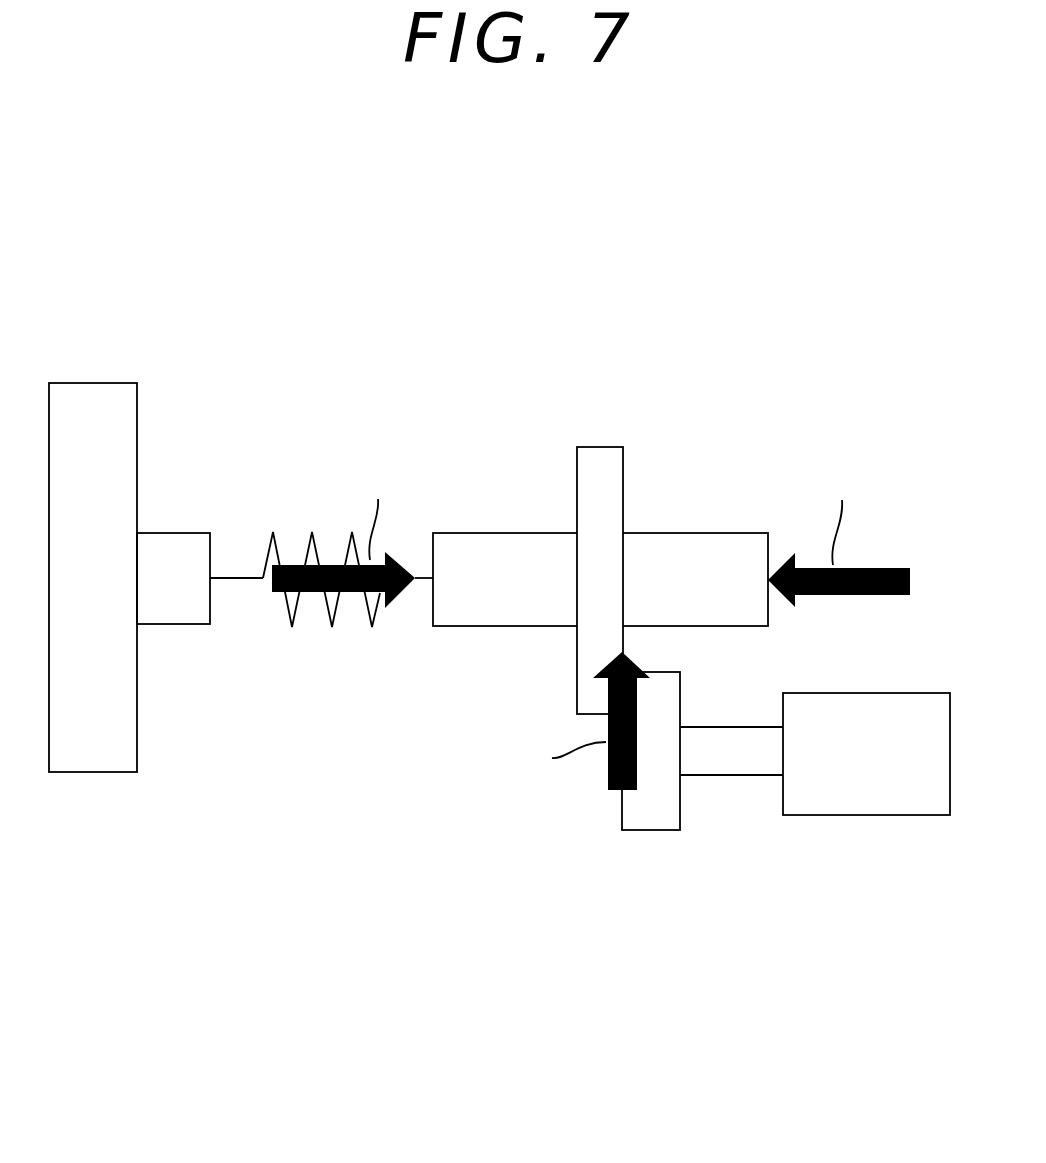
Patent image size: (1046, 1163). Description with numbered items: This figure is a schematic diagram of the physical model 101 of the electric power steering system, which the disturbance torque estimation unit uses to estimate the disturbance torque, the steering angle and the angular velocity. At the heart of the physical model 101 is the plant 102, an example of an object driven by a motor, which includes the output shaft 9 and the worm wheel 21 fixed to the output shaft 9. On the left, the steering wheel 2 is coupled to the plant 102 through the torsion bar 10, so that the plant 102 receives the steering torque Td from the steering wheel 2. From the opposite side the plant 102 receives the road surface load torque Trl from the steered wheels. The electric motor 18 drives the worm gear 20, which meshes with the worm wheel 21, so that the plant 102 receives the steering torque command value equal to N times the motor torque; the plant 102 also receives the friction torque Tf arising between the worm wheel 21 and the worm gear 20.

The steering wheel 2 is at (90, 772).
The torsion bar 10 is at (333, 627).
The output shaft 9 is at (700, 533).
The worm wheel 21 is at (600, 533).
The plant 102 is at (600, 508).
The worm gear 20 is at (653, 830).
The electric motor 18 is at (865, 815).
The physical model 101 is at (499, 641).